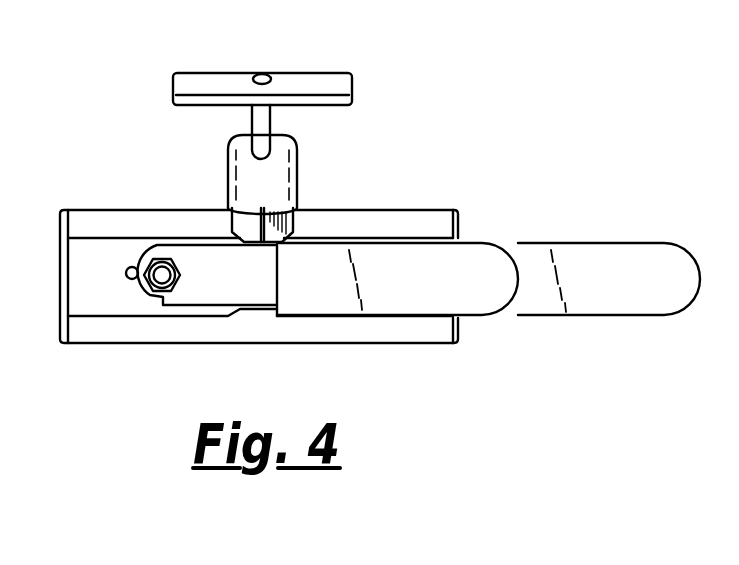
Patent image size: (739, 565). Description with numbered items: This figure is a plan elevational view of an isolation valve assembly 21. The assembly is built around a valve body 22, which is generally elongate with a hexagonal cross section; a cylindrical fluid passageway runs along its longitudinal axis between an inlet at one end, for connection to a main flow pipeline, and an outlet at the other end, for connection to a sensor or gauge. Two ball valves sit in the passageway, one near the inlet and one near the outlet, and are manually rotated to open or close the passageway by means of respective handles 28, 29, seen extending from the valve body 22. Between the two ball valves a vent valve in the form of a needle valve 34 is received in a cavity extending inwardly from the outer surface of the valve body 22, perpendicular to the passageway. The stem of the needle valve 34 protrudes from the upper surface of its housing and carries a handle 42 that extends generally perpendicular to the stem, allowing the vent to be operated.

The isolation valve assembly 21 is at (508, 74).
The valve body 22 is at (111, 352).
The handle 28 is at (398, 295).
The handle 29 is at (608, 295).
The needle valve 34 is at (226, 160).
The handle 42 is at (318, 82).